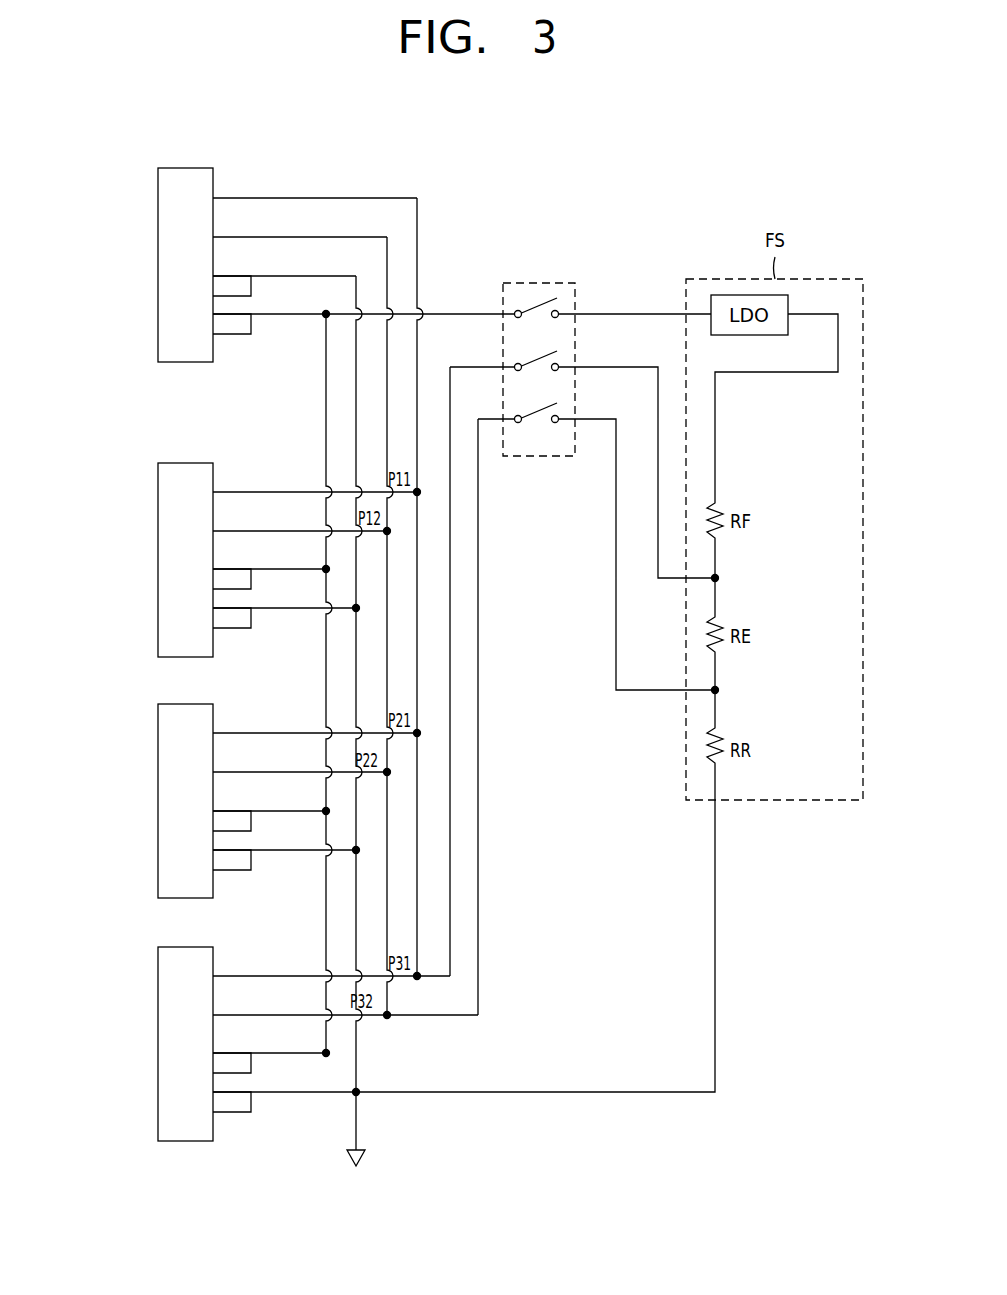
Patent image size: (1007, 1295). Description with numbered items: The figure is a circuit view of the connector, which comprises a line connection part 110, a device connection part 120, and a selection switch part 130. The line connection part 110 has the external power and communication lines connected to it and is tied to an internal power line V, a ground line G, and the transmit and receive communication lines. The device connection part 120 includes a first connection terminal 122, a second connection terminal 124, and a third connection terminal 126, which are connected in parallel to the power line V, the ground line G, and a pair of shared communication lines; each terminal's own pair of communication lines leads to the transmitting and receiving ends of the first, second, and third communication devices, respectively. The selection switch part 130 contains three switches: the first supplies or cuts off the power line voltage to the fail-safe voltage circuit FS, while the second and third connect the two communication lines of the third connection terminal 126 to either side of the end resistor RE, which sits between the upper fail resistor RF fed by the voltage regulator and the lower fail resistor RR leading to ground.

The line connection part 110 is at (158, 265).
The device connection part 120 is at (78, 547).
The first connection terminal 122 is at (158, 558).
The second connection terminal 124 is at (158, 800).
The third connection terminal 126 is at (158, 1043).
The selection switch part 130 is at (540, 283).